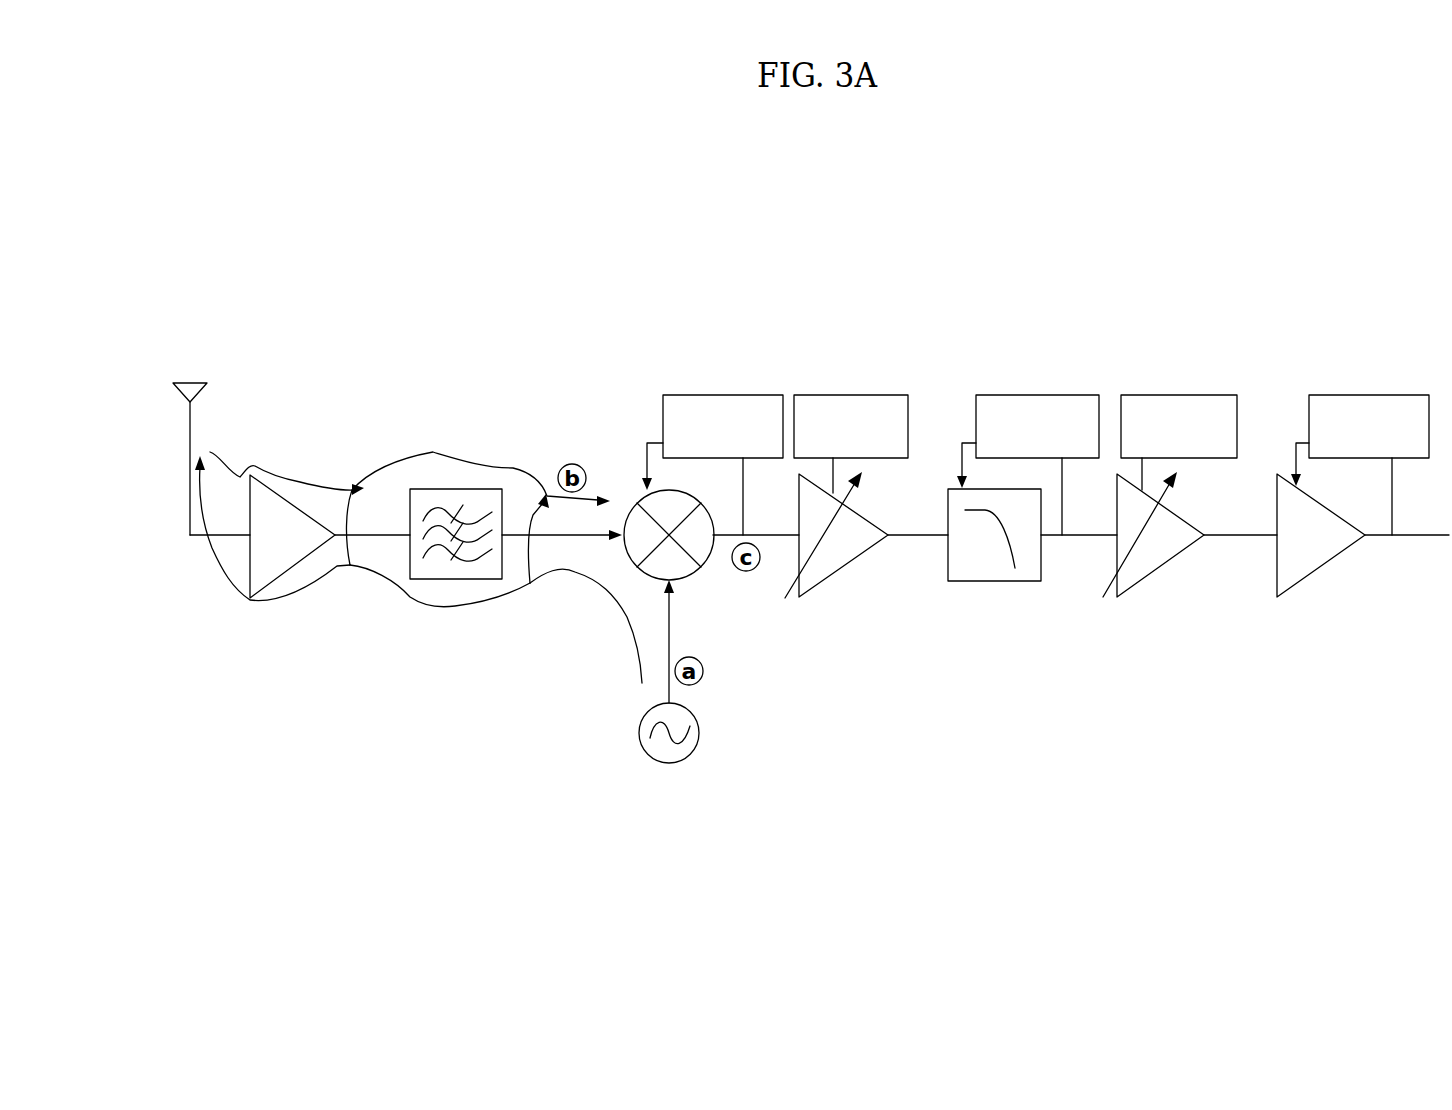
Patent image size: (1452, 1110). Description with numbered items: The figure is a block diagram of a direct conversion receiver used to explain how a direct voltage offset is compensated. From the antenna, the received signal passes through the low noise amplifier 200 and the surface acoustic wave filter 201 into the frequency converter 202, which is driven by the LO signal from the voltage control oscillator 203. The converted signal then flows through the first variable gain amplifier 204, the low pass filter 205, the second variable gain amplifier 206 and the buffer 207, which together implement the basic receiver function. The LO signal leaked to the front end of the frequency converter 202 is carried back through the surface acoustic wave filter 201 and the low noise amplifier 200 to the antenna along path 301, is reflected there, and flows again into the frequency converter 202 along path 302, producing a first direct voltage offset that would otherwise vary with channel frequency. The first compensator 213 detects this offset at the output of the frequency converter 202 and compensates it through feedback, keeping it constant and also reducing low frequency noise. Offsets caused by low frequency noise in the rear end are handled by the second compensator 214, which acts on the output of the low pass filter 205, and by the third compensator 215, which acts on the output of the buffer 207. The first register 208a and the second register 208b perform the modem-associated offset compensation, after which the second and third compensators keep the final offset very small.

The low noise amplifier 200 is at (275, 590).
The surface acoustic wave filter 201 is at (437, 582).
The frequency converter 202 is at (700, 575).
The voltage control oscillator 203 is at (675, 765).
The first variable gain amplifier 204 is at (850, 568).
The low pass filter 205 is at (1017, 583).
The second variable gain amplifier 206 is at (1153, 570).
The buffer 207 is at (1307, 575).
The first register 208a is at (887, 393).
The second register 208b is at (1213, 393).
The first compensator 213 is at (757, 393).
The second compensator 214 is at (1068, 393).
The third compensator 215 is at (1400, 393).
The path 301 is at (230, 585).
The path 302 is at (255, 465).